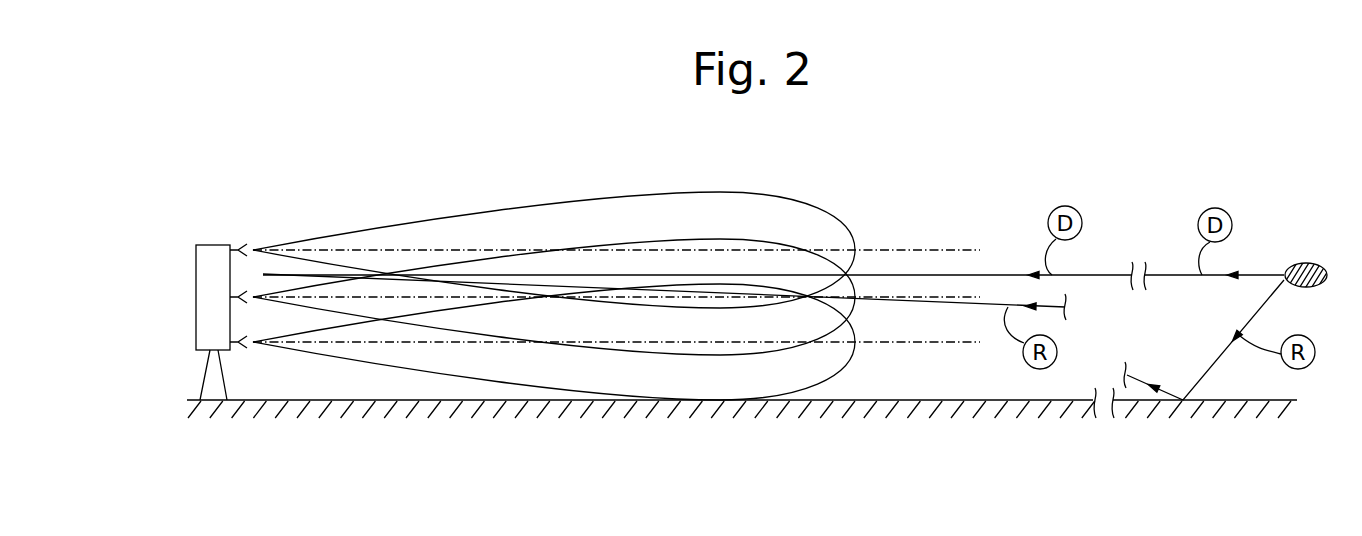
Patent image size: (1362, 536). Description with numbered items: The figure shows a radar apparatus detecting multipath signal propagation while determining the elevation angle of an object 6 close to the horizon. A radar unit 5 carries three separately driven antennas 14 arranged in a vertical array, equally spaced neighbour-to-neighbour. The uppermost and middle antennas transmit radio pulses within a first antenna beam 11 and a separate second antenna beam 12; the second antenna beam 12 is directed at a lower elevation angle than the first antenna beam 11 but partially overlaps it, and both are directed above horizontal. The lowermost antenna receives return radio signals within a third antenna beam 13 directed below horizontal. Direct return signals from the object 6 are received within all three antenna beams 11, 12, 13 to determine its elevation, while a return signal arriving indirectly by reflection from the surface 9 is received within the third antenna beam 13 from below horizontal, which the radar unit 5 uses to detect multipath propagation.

The radar unit 5 is at (205, 272).
The object 6 is at (1306, 262).
The ground surface 9 is at (997, 398).
The first antenna beam 11 is at (855, 246).
The second antenna beam 12 is at (855, 298).
The third antenna beam 13 is at (855, 344).
The antennas 14 is at (247, 232).